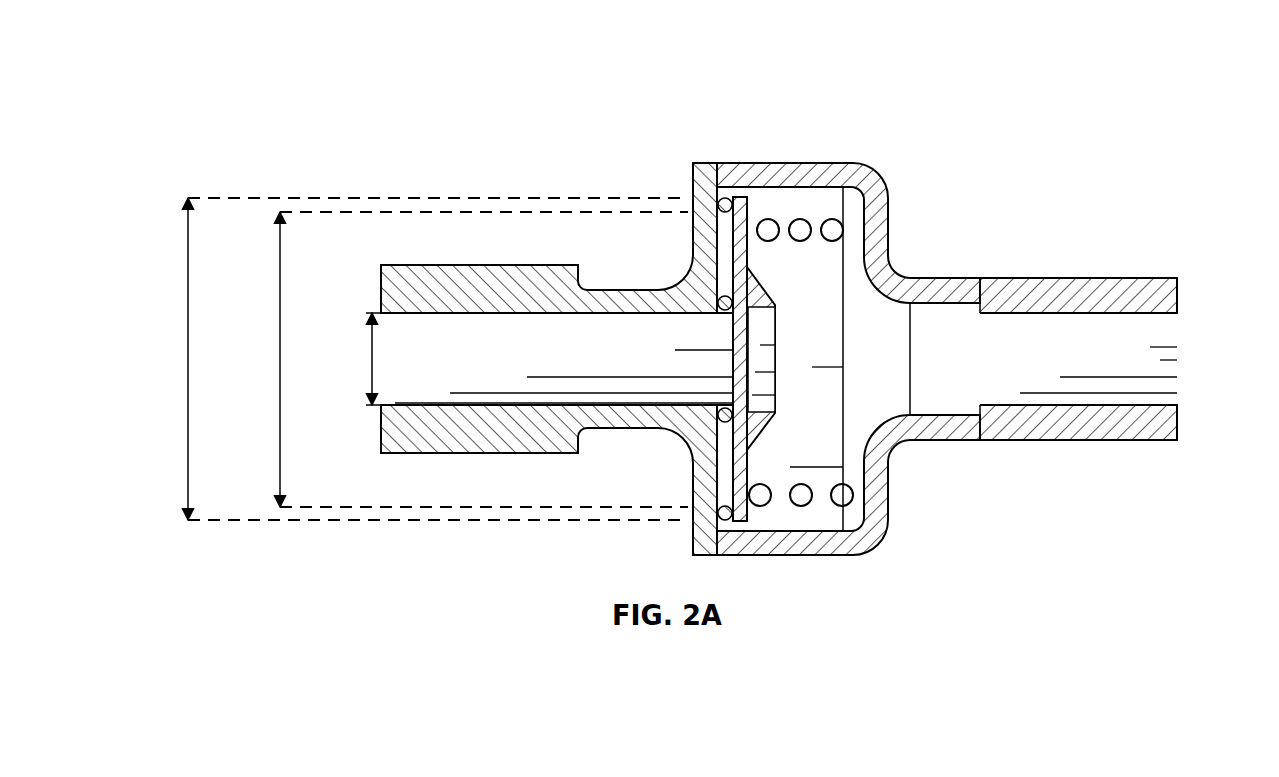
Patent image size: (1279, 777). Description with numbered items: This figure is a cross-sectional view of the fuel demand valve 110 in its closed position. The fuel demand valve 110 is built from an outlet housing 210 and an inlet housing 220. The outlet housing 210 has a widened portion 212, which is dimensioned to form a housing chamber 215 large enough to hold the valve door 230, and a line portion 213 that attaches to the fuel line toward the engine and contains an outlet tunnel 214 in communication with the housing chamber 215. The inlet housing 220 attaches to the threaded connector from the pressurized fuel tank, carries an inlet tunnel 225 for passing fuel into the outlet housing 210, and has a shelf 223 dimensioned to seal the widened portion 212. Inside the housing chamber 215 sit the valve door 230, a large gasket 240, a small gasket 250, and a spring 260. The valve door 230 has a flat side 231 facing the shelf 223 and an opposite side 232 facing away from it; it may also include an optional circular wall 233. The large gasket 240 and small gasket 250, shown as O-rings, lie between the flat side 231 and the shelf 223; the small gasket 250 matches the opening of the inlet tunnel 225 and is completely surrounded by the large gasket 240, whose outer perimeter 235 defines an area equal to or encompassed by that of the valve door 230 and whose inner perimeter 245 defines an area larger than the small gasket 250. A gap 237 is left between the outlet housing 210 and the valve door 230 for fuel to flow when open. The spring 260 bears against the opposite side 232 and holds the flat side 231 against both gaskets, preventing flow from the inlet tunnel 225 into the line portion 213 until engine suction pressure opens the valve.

The fuel demand valve 110 is at (1103, 50).
The outlet housing 210 is at (892, 268).
The widened portion 212 is at (752, 558).
The line portion 213 is at (983, 442).
The outlet tunnel 214 is at (1163, 360).
The housing chamber 215 is at (822, 198).
The inlet housing 220 is at (460, 265).
The shelf 223 is at (693, 186).
The inlet tunnel 225 is at (372, 392).
The valve door 230 is at (768, 202).
The flat side 231 is at (733, 250).
The opposite side 232 is at (750, 470).
The circular wall 233 is at (775, 302).
The outer perimeter 235 is at (188, 292).
The gap 237 is at (767, 188).
The large gasket 240 is at (706, 163).
The inner perimeter 245 is at (280, 332).
The small gasket 250 is at (718, 415).
The spring 260 is at (846, 192).